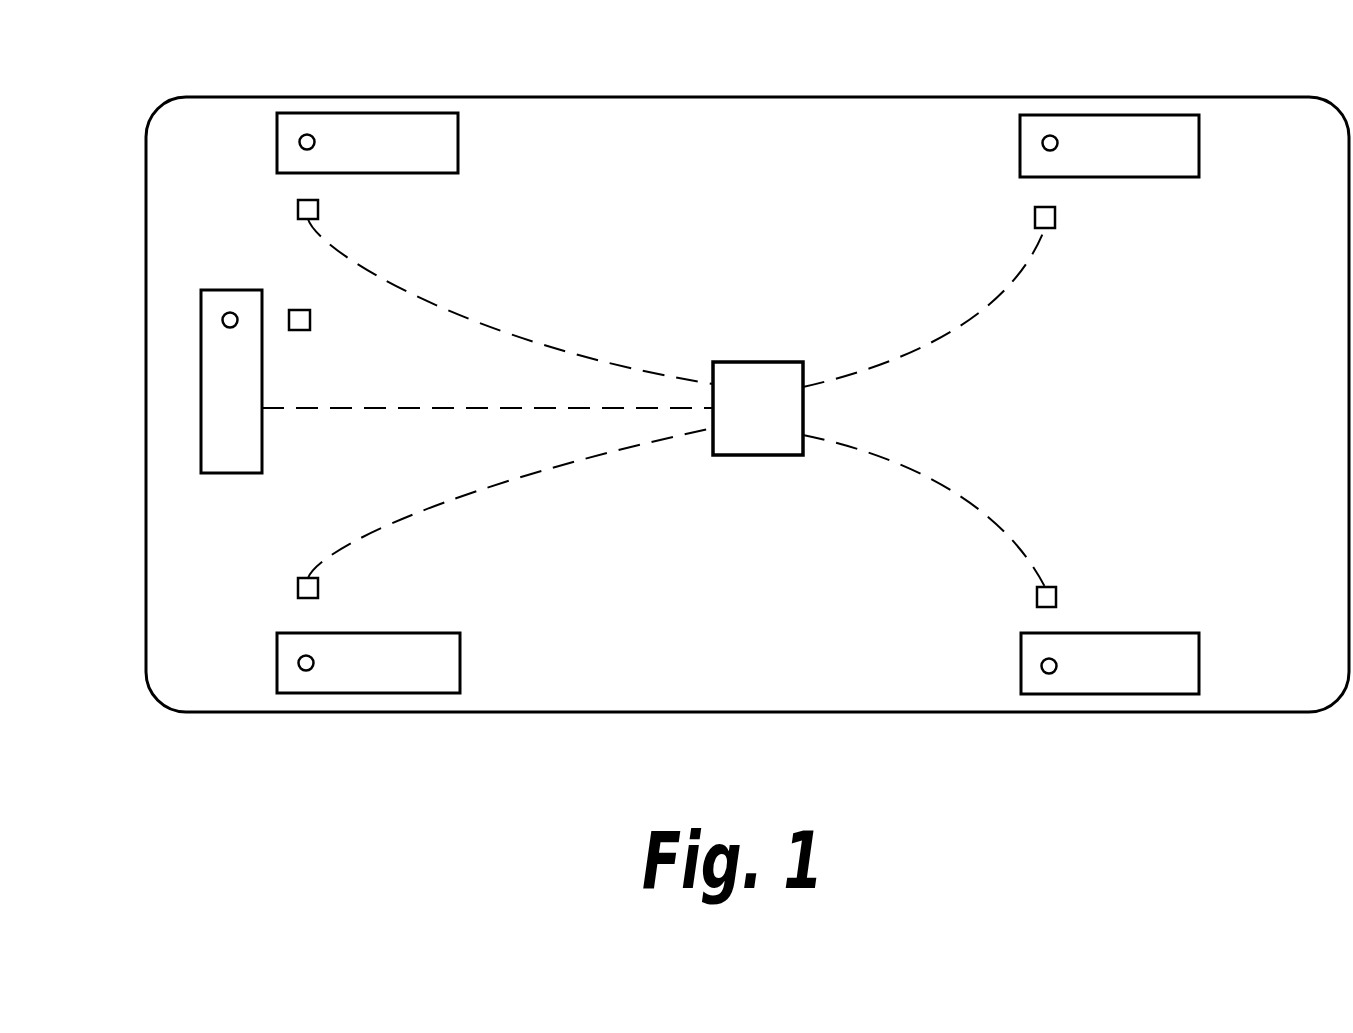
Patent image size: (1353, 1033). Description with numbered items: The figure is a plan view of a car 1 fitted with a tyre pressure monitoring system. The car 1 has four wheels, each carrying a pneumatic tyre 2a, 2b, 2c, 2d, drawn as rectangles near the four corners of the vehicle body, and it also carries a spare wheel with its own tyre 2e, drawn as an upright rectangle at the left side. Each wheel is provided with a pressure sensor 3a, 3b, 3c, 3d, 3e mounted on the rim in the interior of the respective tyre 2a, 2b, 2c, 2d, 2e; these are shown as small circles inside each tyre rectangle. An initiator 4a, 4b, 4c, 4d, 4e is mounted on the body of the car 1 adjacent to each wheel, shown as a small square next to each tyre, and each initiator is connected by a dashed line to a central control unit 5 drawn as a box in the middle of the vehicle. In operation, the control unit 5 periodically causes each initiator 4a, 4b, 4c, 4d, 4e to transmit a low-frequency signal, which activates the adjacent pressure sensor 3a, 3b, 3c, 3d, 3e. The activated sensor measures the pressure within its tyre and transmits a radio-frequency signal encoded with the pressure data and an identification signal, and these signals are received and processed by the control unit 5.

The car 1 is at (146, 593).
The pneumatic tyre 2a is at (458, 146).
The pneumatic tyre 2b is at (460, 668).
The pneumatic tyre 2c is at (1199, 160).
The pneumatic tyre 2d is at (1199, 667).
The spare wheel tyre 2e is at (262, 438).
The pressure sensor 3a is at (312, 136).
The pressure sensor 3b is at (313, 660).
The pressure sensor 3c is at (1055, 137).
The pressure sensor 3d is at (1055, 660).
The pressure sensor 3e is at (230, 313).
The initiator 4a is at (318, 209).
The initiator 4b is at (297, 589).
The initiator 4c is at (1055, 218).
The initiator 4d is at (1037, 594).
The initiator 4e is at (310, 320).
The control unit 5 is at (760, 455).